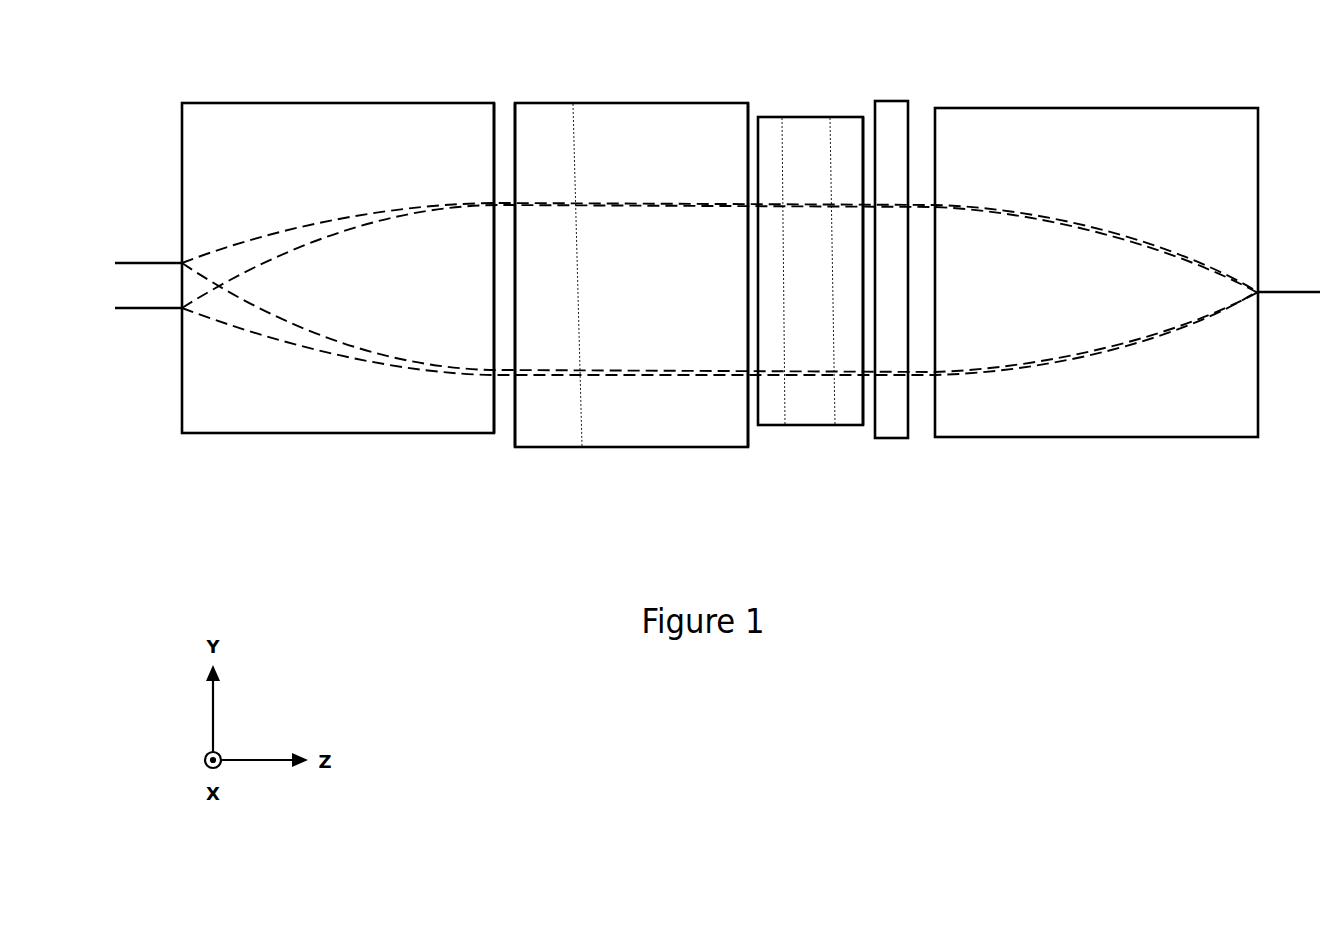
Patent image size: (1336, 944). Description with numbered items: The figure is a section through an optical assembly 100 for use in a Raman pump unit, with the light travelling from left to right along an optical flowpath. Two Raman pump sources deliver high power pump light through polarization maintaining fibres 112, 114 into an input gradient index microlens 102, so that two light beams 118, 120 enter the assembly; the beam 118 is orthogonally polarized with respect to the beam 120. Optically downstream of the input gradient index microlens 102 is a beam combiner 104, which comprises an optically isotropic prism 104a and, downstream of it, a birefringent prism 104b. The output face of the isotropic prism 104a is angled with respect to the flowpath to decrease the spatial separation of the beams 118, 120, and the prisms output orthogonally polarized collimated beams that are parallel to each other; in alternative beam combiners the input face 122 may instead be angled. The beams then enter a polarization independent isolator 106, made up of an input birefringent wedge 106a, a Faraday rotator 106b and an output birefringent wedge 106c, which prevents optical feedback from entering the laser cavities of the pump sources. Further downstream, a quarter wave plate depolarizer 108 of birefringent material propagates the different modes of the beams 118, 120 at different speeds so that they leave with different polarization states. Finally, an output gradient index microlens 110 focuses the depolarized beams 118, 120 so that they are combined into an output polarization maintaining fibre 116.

The optical assembly 100 is at (710, 300).
The input gradient index microlens 102 is at (295, 122).
The beam combiner 104 is at (631, 283).
The optically isotropic prism 104a is at (545, 118).
The birefringent prism 104b is at (672, 117).
The polarization independent isolator 106 is at (805, 272).
The input birefringent wedge 106a is at (775, 428).
The Faraday rotator 106b is at (813, 428).
The output birefringent wedge 106c is at (848, 428).
The quarter wave plate depolarizer 108 is at (890, 100).
The output gradient index microlens 110 is at (1086, 437).
The polarization maintaining fibre 112 is at (142, 262).
The polarization maintaining fibre 114 is at (142, 312).
The output polarization maintaining fibre 116 is at (1292, 290).
The light beam 118 is at (248, 240).
The light beam 120 is at (248, 333).
The input face 122 is at (513, 142).